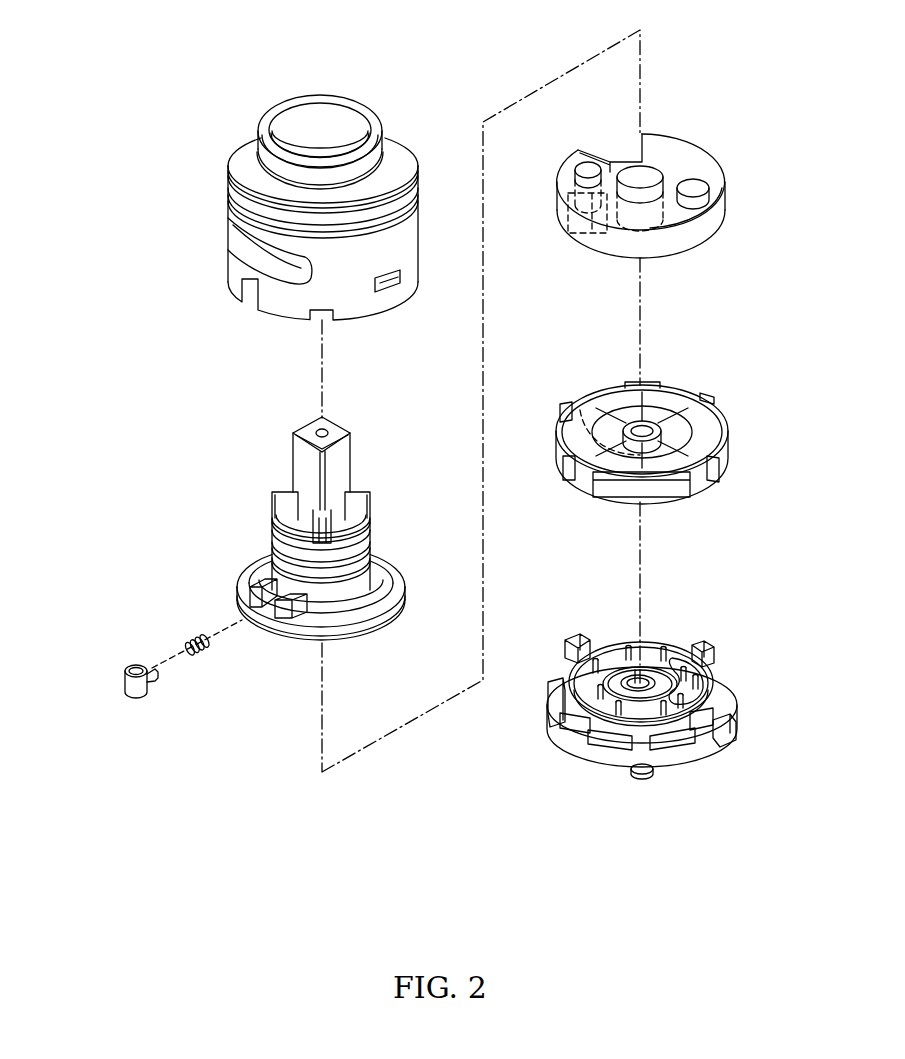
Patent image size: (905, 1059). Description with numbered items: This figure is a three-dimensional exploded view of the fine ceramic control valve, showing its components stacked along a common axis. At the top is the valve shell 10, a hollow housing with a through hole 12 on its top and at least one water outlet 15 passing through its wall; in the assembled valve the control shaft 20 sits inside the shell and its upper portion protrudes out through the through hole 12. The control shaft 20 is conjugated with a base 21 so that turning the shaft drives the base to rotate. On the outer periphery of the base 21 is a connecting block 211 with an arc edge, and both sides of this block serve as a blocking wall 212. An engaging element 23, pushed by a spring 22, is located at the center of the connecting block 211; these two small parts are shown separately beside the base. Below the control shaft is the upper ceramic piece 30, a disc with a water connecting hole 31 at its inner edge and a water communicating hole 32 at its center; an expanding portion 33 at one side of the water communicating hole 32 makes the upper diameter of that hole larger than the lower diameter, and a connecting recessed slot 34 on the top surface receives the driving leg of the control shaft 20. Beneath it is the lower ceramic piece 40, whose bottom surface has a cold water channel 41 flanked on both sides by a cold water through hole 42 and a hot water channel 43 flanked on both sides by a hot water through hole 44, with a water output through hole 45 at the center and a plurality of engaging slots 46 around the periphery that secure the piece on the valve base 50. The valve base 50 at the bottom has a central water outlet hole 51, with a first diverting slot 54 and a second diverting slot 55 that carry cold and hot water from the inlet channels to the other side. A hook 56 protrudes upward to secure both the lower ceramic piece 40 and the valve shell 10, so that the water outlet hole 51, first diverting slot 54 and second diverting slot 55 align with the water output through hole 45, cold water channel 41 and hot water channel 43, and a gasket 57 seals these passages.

The valve shell 10 is at (216, 226).
The through hole 12 is at (333, 150).
The water outlet 15 is at (307, 272).
The control shaft 20 is at (361, 437).
The base 21 is at (374, 535).
The connecting block 211 is at (252, 586).
The blocking wall 212 is at (257, 582).
The spring 22 is at (210, 653).
The engaging element 23 is at (133, 697).
The upper ceramic piece 30 is at (590, 248).
The water connecting hole 31 is at (610, 150).
The water communicating hole 32 is at (653, 177).
The expanding portion 33 is at (562, 186).
The connecting recessed slot 34 is at (703, 188).
The lower ceramic piece 40 is at (707, 390).
The cold water channel 41 is at (597, 430).
The cold water through hole 42 is at (657, 398).
The hot water channel 43 is at (725, 472).
The hot water through hole 44 is at (697, 415).
The water output through hole 45 is at (637, 427).
The engaging slots 46 is at (566, 467).
The valve base 50 is at (604, 771).
The water outlet hole 51 is at (625, 657).
The first diverting slot 54 is at (553, 723).
The second diverting slot 55 is at (710, 660).
The hook 56 is at (723, 713).
The gasket 57 is at (568, 643).